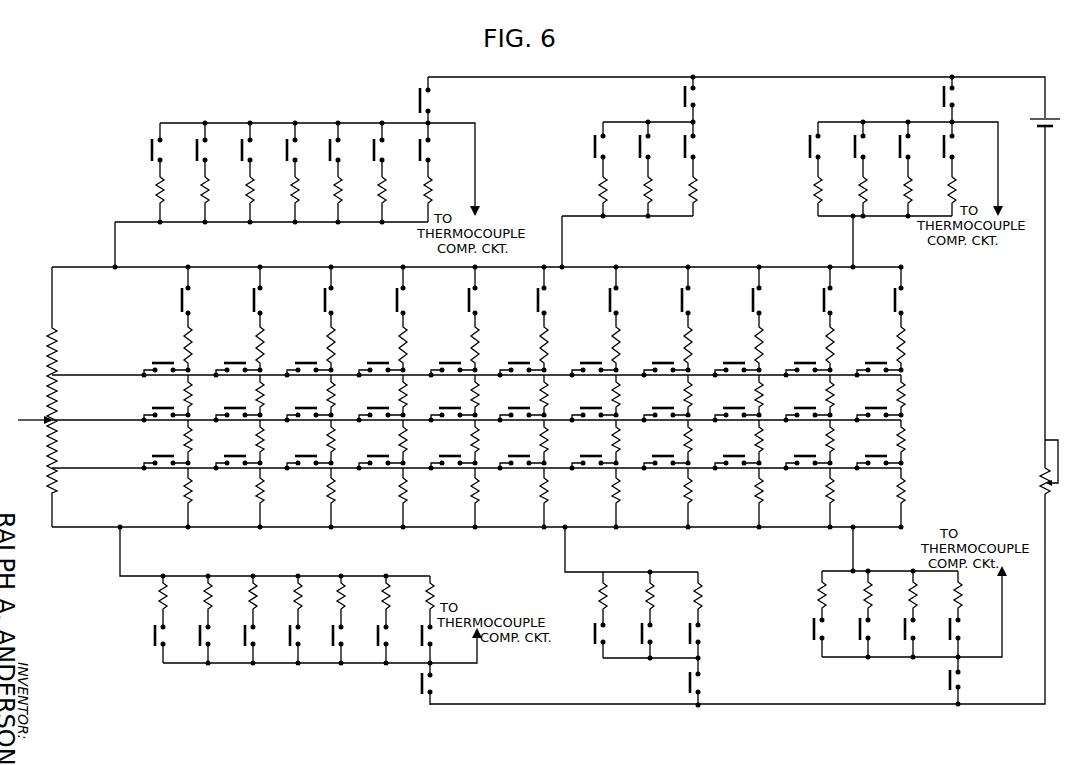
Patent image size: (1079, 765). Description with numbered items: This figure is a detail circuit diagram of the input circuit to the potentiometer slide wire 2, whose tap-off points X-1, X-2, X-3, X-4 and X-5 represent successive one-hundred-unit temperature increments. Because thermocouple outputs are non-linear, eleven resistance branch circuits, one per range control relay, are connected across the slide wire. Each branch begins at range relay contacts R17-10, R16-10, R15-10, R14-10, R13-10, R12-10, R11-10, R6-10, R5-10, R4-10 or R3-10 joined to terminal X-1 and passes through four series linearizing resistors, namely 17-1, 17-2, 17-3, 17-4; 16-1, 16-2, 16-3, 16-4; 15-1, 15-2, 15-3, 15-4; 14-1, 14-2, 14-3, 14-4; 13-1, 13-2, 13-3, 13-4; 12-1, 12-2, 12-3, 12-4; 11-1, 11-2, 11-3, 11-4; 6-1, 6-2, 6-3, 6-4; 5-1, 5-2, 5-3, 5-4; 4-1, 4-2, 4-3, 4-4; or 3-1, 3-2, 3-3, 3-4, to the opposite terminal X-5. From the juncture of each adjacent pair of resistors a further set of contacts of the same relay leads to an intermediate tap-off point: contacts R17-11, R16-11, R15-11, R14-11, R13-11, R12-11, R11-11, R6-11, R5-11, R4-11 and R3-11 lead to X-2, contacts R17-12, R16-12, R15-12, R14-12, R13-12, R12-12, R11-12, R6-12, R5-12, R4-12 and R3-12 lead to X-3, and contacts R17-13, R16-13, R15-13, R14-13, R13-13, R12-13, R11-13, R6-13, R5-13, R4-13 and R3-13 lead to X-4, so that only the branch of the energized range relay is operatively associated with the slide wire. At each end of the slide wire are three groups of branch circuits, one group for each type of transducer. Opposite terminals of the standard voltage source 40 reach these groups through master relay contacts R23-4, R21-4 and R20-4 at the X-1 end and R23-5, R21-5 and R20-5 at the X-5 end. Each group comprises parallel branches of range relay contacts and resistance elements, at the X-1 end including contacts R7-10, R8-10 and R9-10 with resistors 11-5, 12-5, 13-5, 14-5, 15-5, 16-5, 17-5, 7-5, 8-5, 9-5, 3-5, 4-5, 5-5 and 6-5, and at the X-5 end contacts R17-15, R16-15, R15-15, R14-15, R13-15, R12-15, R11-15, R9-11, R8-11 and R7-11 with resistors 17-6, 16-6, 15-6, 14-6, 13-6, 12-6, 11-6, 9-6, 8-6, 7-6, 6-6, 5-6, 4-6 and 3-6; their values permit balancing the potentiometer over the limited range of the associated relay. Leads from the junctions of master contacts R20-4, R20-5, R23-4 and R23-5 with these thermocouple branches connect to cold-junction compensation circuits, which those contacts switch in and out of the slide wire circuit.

The slide wire 2 is at (48, 330).
The standard source of voltage 40 is at (1048, 132).
The slide wire terminal X-1 is at (52, 267).
The intermediate tap-off point X-2 is at (67, 375).
The intermediate tap-off point X-3 is at (67, 420).
The intermediate tap-off point X-4 is at (67, 468).
The slide wire terminal X-5 is at (52, 527).
The master relay contact R23-4 is at (450, 100).
The master relay contact R21-4 is at (715, 99).
The master relay contact R20-4 is at (974, 99).
The master relay contact R23-5 is at (417, 684).
The master relay contact R21-5 is at (686, 683).
The master relay contact R20-5 is at (946, 682).
The range control relay contact R17-10 is at (295, 222).
The range control relay contact R16-10 is at (308, 222).
The range control relay contact R15-10 is at (321, 222).
The range control relay contact R14-10 is at (336, 222).
The range control relay contact R13-10 is at (349, 222).
The range control relay contact R12-10 is at (361, 222).
The range control relay contact R11-10 is at (375, 222).
The range control relay contact R9-10 is at (680, 149).
The range control relay contact R8-10 is at (635, 149).
The range control relay contact R7-10 is at (590, 149).
The range control relay contact R6-10 is at (807, 222).
The range control relay contact R5-10 is at (820, 222).
The range control relay contact R4-10 is at (833, 222).
The range control relay contact R3-10 is at (846, 222).
The range control relay contact R17-11 is at (166, 360).
The range control relay contact R16-11 is at (238, 360).
The range control relay contact R15-11 is at (309, 360).
The range control relay contact R14-11 is at (381, 360).
The range control relay contact R13-11 is at (453, 360).
The range control relay contact R12-11 is at (522, 360).
The range control relay contact R11-11 is at (594, 360).
The range control relay contact R9-11 is at (589, 635).
The range control relay contact R8-11 is at (636, 635).
The range control relay contact R7-11 is at (684, 635).
The range control relay contact R6-11 is at (733, 500).
The range control relay contact R5-11 is at (792, 500).
The range control relay contact R4-11 is at (850, 500).
The range control relay contact R3-11 is at (908, 500).
The range control relay contact R17-12 is at (166, 406).
The range control relay contact R16-12 is at (238, 406).
The range control relay contact R15-12 is at (309, 406).
The range control relay contact R14-12 is at (381, 406).
The range control relay contact R13-12 is at (453, 406).
The range control relay contact R12-12 is at (522, 406).
The range control relay contact R11-12 is at (594, 406).
The range control relay contact R6-12 is at (666, 406).
The range control relay contact R5-12 is at (737, 406).
The range control relay contact R4-12 is at (808, 406).
The range control relay contact R3-12 is at (879, 406).
The range control relay contact R17-13 is at (166, 454).
The range control relay contact R16-13 is at (238, 454).
The range control relay contact R15-13 is at (309, 454).
The range control relay contact R14-13 is at (381, 454).
The range control relay contact R13-13 is at (453, 454).
The range control relay contact R12-13 is at (522, 454).
The range control relay contact R11-13 is at (594, 454).
The range control relay contact R6-13 is at (666, 454).
The range control relay contact R5-13 is at (737, 454).
The range control relay contact R4-13 is at (808, 454).
The range control relay contact R3-13 is at (879, 454).
The range control relay contact R17-15 is at (149, 636).
The range control relay contact R16-15 is at (194, 636).
The range control relay contact R15-15 is at (239, 636).
The range control relay contact R14-15 is at (284, 636).
The range control relay contact R13-15 is at (327, 636).
The range control relay contact R12-15 is at (372, 636).
The range control relay contact R11-15 is at (416, 636).
The linearizing resistor 17-1 is at (191, 338).
The linearizing resistor 16-1 is at (263, 338).
The linearizing resistor 15-1 is at (334, 338).
The linearizing resistor 14-1 is at (406, 338).
The linearizing resistor 13-1 is at (478, 338).
The linearizing resistor 12-1 is at (547, 338).
The linearizing resistor 11-1 is at (619, 338).
The linearizing resistor 6-1 is at (691, 338).
The linearizing resistor 5-1 is at (762, 338).
The linearizing resistor 4-1 is at (833, 338).
The linearizing resistor 3-1 is at (904, 338).
The linearizing resistor 17-2 is at (191, 392).
The linearizing resistor 16-2 is at (263, 392).
The linearizing resistor 15-2 is at (334, 392).
The linearizing resistor 14-2 is at (406, 392).
The linearizing resistor 13-2 is at (478, 392).
The linearizing resistor 12-2 is at (547, 392).
The linearizing resistor 11-2 is at (619, 392).
The linearizing resistor 6-2 is at (691, 392).
The linearizing resistor 5-2 is at (762, 392).
The linearizing resistor 4-2 is at (833, 392).
The linearizing resistor 3-2 is at (904, 395).
The linearizing resistor 17-3 is at (191, 438).
The linearizing resistor 16-3 is at (263, 438).
The linearizing resistor 15-3 is at (334, 438).
The linearizing resistor 14-3 is at (406, 438).
The linearizing resistor 13-3 is at (478, 438).
The linearizing resistor 12-3 is at (547, 438).
The linearizing resistor 11-3 is at (619, 438).
The linearizing resistor 6-3 is at (691, 438).
The linearizing resistor 5-3 is at (762, 438).
The linearizing resistor 4-3 is at (833, 438).
The linearizing resistor 3-3 is at (904, 441).
The linearizing resistor 17-4 is at (191, 488).
The linearizing resistor 16-4 is at (263, 488).
The linearizing resistor 15-4 is at (334, 488).
The linearizing resistor 14-4 is at (406, 488).
The linearizing resistor 13-4 is at (478, 488).
The linearizing resistor 12-4 is at (547, 488).
The linearizing resistor 11-4 is at (619, 488).
The linearizing resistor 6-4 is at (691, 488).
The linearizing resistor 5-4 is at (762, 488).
The linearizing resistor 4-4 is at (833, 488).
The linearizing resistor 3-4 is at (904, 490).
The range resistance element 17-5 is at (431, 195).
The range resistance element 16-5 is at (390, 193).
The range resistance element 15-5 is at (346, 193).
The range resistance element 14-5 is at (303, 193).
The range resistance element 13-5 is at (258, 193).
The range resistance element 12-5 is at (213, 193).
The range resistance element 11-5 is at (168, 193).
The range resistance element 9-5 is at (701, 193).
The range resistance element 8-5 is at (656, 193).
The range resistance element 7-5 is at (611, 193).
The range resistance element 6-5 is at (960, 193).
The range resistance element 5-5 is at (916, 193).
The range resistance element 4-5 is at (871, 193).
The range resistance element 3-5 is at (826, 193).
The range resistance element 17-6 is at (171, 588).
The range resistance element 16-6 is at (216, 588).
The range resistance element 15-6 is at (261, 588).
The range resistance element 14-6 is at (306, 588).
The range resistance element 13-6 is at (349, 588).
The range resistance element 12-6 is at (394, 588).
The range resistance element 11-6 is at (433, 594).
The range resistance element 9-6 is at (611, 588).
The range resistance element 8-6 is at (658, 588).
The range resistance element 7-6 is at (706, 588).
The range resistance element 6-6 is at (830, 587).
The range resistance element 5-6 is at (876, 587).
The range resistance element 4-6 is at (921, 587).
The range resistance element 3-6 is at (966, 587).